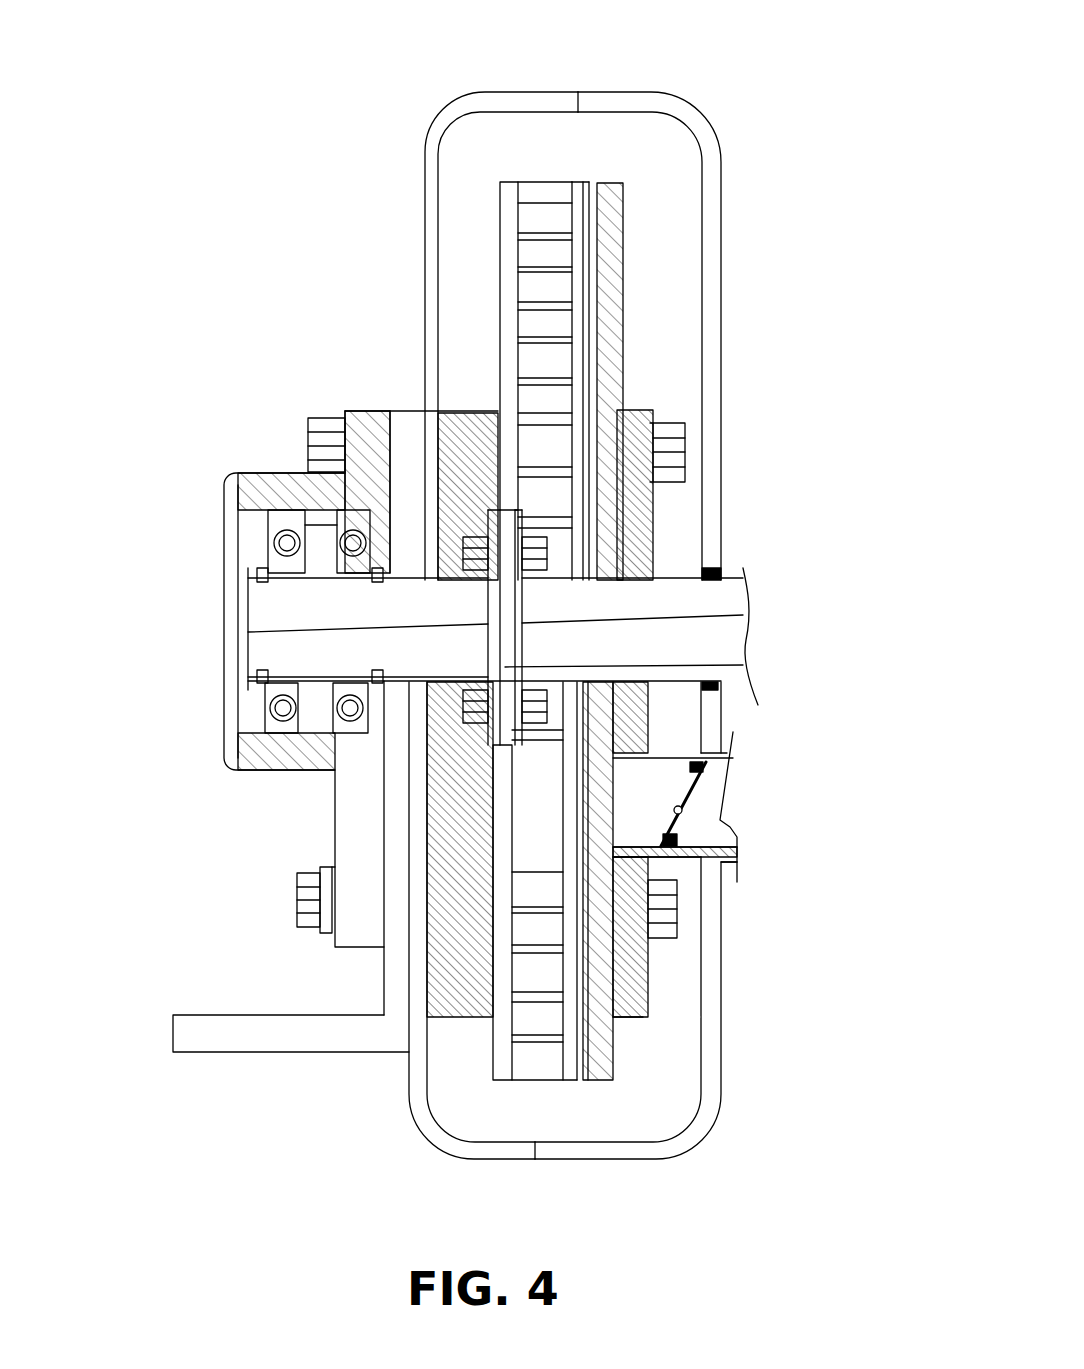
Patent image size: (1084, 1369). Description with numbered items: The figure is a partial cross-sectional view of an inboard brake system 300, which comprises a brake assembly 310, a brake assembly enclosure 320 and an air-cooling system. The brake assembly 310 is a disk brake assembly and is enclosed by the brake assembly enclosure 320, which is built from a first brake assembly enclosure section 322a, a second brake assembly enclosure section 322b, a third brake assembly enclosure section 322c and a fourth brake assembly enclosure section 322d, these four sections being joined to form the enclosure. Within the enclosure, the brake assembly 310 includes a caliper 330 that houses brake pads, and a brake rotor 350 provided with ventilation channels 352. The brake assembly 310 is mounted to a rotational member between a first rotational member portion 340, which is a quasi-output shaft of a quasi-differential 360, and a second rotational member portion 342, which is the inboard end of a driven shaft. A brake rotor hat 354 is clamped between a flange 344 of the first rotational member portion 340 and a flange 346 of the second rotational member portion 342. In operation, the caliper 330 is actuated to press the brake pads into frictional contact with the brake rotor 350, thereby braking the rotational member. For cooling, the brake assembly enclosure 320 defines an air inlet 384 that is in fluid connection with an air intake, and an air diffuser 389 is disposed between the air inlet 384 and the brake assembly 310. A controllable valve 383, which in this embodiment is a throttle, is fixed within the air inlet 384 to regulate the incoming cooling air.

The inboard brake system 300 is at (174, 258).
The brake assembly 310 is at (675, 1027).
The brake assembly enclosure 320 is at (417, 288).
The first brake assembly enclosure section 322a is at (427, 197).
The second brake assembly enclosure section 322b is at (723, 420).
The third brake assembly enclosure section 322c is at (437, 1140).
The fourth brake assembly enclosure section 322d is at (720, 935).
The caliper 330 is at (437, 430).
The first rotational member portion 340 is at (276, 613).
The second rotational member portion 342 is at (698, 605).
The flange 344 is at (248, 632).
The flange 346 is at (743, 615).
The brake rotor 350 is at (498, 187).
The ventilation channels 352 is at (553, 367).
The brake rotor hat 354 is at (743, 665).
The quasi-differential 360 is at (282, 473).
The controllable valve 383 is at (690, 793).
The air inlet 384 is at (708, 817).
The air diffuser 389 is at (623, 237).